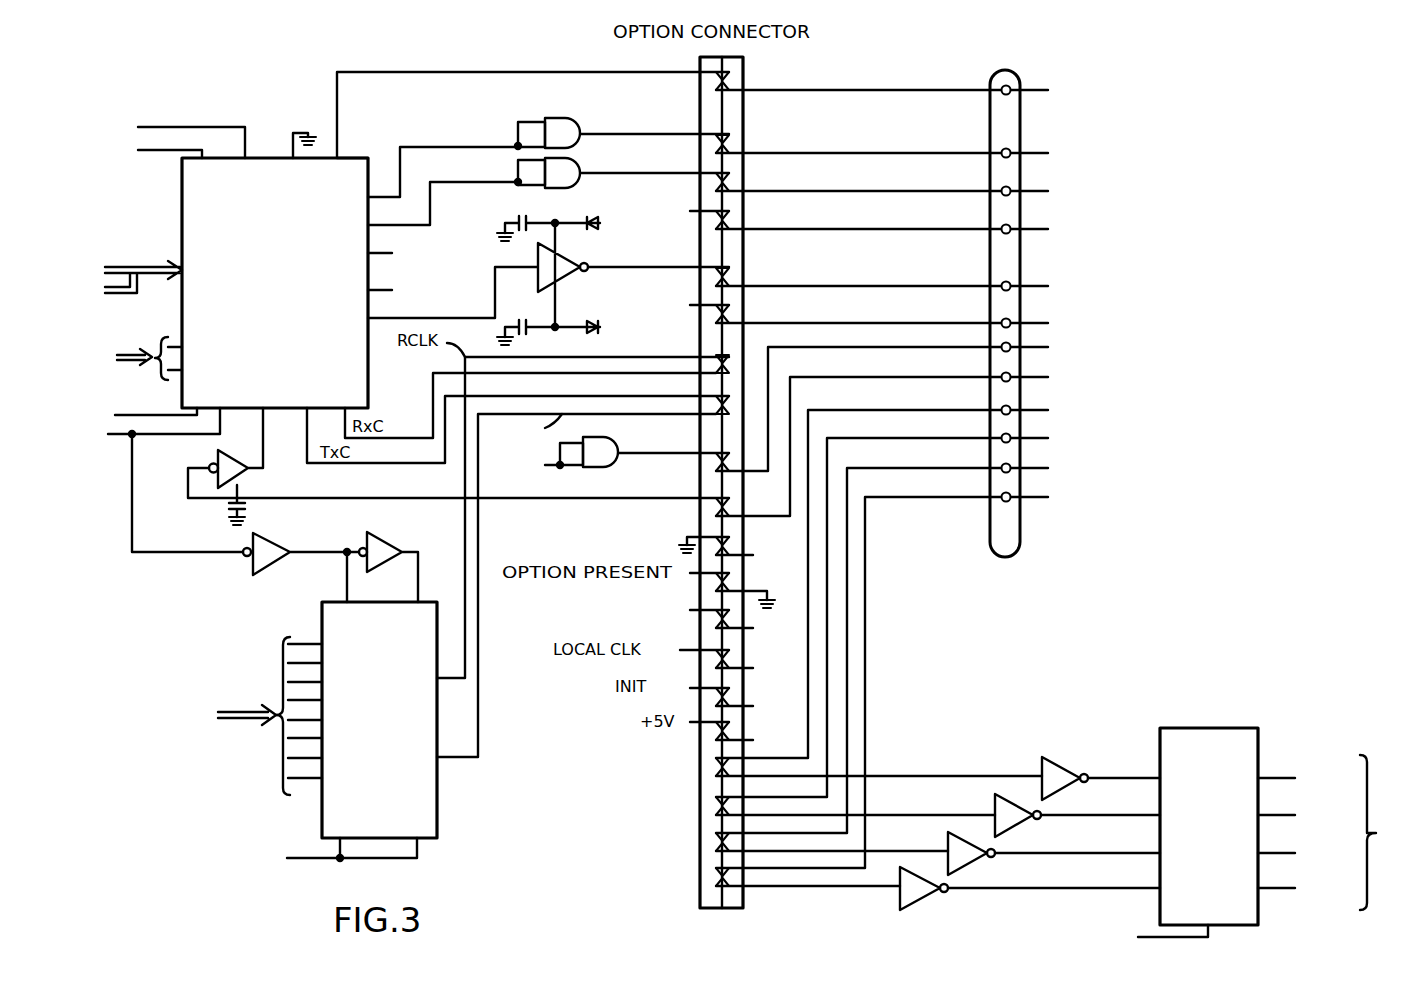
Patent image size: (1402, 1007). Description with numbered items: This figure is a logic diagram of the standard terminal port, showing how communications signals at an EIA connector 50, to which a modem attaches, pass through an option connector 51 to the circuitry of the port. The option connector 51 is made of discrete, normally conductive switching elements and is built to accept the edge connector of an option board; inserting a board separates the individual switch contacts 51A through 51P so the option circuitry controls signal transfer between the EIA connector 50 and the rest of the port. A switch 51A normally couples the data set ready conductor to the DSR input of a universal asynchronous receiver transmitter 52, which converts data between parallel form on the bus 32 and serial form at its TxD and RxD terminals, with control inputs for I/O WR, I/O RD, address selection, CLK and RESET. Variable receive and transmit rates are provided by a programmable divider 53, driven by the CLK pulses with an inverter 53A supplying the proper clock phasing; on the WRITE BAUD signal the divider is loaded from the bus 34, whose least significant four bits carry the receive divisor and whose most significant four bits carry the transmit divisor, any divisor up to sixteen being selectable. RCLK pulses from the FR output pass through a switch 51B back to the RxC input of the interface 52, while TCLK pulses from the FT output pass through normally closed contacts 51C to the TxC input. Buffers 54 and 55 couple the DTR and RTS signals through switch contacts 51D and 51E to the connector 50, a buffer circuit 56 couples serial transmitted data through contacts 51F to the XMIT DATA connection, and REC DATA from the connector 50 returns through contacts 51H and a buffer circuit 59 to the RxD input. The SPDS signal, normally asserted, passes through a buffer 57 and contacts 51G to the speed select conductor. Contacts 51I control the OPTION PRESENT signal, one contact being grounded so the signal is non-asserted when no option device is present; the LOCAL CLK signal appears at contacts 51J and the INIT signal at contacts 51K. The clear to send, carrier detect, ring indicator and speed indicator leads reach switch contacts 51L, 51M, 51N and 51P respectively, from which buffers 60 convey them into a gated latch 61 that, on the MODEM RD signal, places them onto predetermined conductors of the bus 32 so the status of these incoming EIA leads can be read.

The bus 32 is at (118, 265).
The bus 34 is at (120, 298).
The EIA connector 50 is at (992, 72).
The option connector 51 is at (745, 76).
The switch 51A is at (728, 92).
The switch 51B is at (706, 358).
The switch contacts 51C is at (702, 410).
The switch contacts 51D is at (740, 146).
The switch contacts 51E is at (742, 186).
The switch contacts 51F is at (736, 279).
The switch contacts 51G is at (712, 462).
The switch contacts 51H is at (712, 506).
The switch contacts 51I is at (736, 585).
The contacts 51J is at (740, 664).
The contacts 51K is at (740, 701).
The switch contacts 51L is at (714, 763).
The switch contacts 51M is at (714, 802).
The switch contacts 51N is at (714, 838).
The switch contacts 51P is at (714, 872).
The universal asynchronous receiver transmitter 52 is at (182, 206).
The programmable divider 53 is at (322, 610).
The inverter 53A is at (404, 530).
The buffer 54 is at (580, 128).
The buffer 55 is at (582, 166).
The buffer circuit 56 is at (594, 260).
The buffer 57 is at (590, 470).
The inverter 59 is at (250, 470).
The buffers 60 is at (1088, 750).
The gated latch 61 is at (1215, 728).